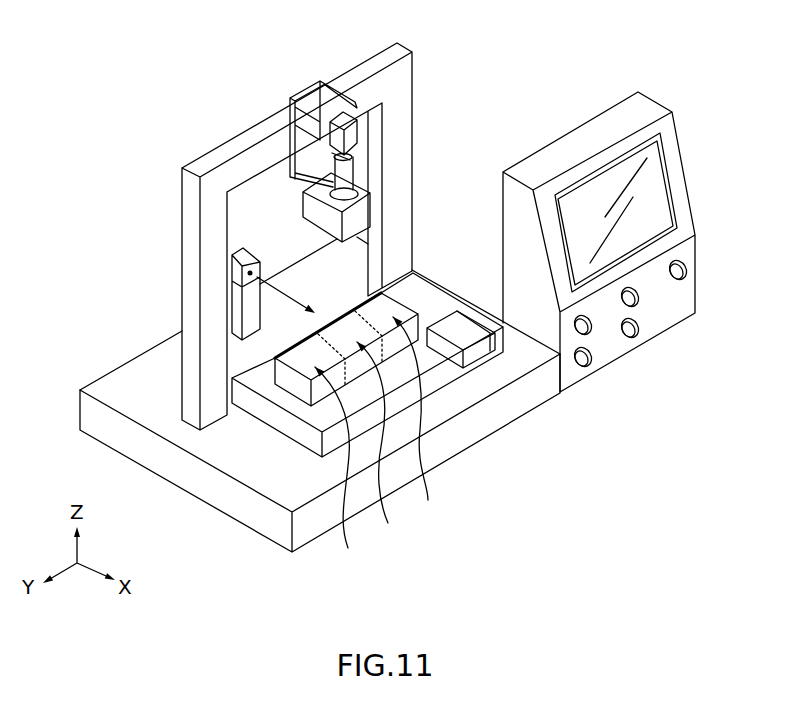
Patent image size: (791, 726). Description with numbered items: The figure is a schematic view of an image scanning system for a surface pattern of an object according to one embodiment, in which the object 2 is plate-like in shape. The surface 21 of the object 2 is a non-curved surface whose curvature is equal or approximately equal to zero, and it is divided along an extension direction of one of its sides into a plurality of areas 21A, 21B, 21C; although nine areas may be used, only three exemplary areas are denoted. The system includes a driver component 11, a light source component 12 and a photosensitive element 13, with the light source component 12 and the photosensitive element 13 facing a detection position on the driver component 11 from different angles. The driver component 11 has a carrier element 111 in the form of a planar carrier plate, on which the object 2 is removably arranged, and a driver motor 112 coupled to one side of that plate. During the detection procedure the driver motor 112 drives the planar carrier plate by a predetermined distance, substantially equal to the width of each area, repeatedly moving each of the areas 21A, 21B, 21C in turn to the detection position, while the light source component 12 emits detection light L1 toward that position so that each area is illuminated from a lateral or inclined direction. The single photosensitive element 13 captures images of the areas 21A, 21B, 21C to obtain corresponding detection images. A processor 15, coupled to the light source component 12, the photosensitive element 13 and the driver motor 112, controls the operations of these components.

The object 2 is at (366, 444).
The driver component 11 is at (392, 397).
The carrier element 111 is at (452, 366).
The driver motor 112 is at (490, 348).
The light source component 12 is at (235, 263).
The photosensitive element 13 is at (344, 118).
The processor 15 is at (607, 343).
The surface 21 is at (386, 451).
The area 21A is at (345, 453).
The area 21B is at (385, 429).
The area 21C is at (423, 421).
The light L1 is at (257, 278).